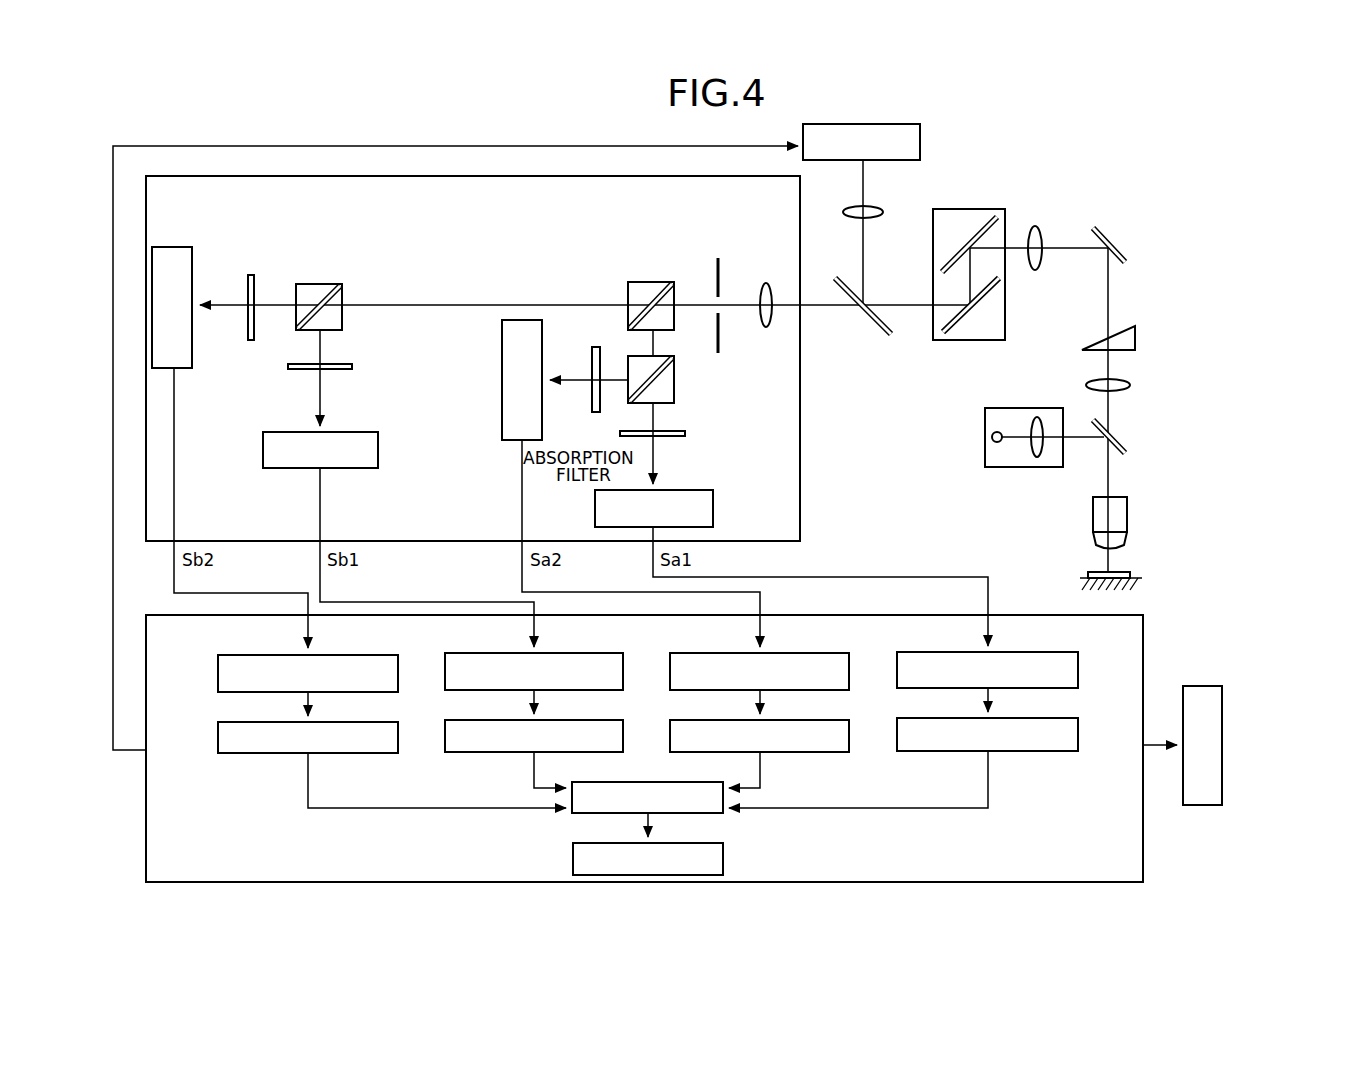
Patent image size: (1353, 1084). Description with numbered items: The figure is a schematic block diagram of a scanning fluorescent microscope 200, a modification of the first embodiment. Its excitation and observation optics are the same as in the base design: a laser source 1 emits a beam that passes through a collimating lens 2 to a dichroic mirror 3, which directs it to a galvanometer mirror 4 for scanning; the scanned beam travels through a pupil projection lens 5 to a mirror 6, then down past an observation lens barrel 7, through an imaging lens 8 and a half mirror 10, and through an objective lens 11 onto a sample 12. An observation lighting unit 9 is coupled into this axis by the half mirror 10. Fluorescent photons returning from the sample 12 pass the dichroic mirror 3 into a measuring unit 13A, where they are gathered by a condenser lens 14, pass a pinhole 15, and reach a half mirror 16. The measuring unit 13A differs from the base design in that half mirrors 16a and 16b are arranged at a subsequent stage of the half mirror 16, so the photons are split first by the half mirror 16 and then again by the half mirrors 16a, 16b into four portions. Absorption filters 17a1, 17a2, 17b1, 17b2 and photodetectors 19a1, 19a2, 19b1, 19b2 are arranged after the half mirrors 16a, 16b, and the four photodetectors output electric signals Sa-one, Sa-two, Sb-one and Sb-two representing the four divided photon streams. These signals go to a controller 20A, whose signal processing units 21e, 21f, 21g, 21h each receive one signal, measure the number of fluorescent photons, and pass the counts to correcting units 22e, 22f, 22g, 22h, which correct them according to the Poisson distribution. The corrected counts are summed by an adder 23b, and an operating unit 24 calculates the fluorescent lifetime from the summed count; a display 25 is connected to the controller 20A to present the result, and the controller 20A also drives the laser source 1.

The laser source 1 is at (921, 141).
The collimating lens 2 is at (872, 206).
The dichroic mirror 3 is at (866, 338).
The galvanometer mirror 4 is at (999, 209).
The pupil projection lens 5 is at (1036, 271).
The mirror 6 is at (1136, 234).
The observation lens barrel 7 is at (1138, 340).
The imaging lens 8 is at (1158, 386).
The observation lighting unit 9 is at (1021, 468).
The half mirror 10 is at (1126, 445).
The objective lens 11 is at (1128, 512).
The sample 12 is at (1130, 572).
The measuring unit 13A is at (652, 176).
The condenser lens 14 is at (766, 283).
The pinhole 15 is at (720, 348).
The half mirror 16 is at (650, 290).
The half mirror 16a is at (662, 380).
The half mirror 16b is at (323, 284).
The absorption filter 17a1 is at (618, 434).
The absorption filter 17a2 is at (596, 347).
The absorption filter 17b1 is at (353, 366).
The absorption filter 17b2 is at (250, 341).
The photodetector 19a1 is at (714, 510).
The photodetector 19a2 is at (500, 332).
The photodetector 19b1 is at (379, 447).
The photodetector 19b2 is at (172, 247).
The controller 20A is at (1006, 615).
The signal processing unit 21e is at (1058, 652).
The signal processing unit 21f is at (828, 653).
The signal processing unit 21g is at (595, 653).
The signal processing unit 21h is at (364, 655).
The correcting unit 22e is at (1056, 718).
The correcting unit 22f is at (828, 720).
The correcting unit 22g is at (595, 720).
The correcting unit 22h is at (364, 722).
The adder 23b is at (688, 782).
The operating unit 24 is at (688, 843).
The display 25 is at (1196, 686).
The scanning fluorescent microscope 200 is at (1172, 182).